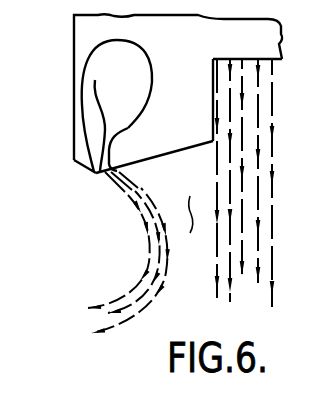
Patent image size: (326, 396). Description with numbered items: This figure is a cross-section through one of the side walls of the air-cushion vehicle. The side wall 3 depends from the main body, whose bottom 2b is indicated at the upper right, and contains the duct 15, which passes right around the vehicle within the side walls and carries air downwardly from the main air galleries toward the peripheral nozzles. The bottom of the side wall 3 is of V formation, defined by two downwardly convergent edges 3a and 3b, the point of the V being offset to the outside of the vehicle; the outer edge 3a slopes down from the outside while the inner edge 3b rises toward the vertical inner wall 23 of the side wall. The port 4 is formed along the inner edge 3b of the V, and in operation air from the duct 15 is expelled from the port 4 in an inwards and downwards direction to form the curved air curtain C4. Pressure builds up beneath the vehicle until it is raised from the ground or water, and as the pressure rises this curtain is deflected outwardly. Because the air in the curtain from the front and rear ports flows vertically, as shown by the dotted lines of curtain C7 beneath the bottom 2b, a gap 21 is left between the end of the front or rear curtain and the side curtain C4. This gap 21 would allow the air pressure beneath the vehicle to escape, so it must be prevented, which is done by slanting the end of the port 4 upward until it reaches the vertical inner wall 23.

The duct 15 is at (107, 62).
The bottom of the main body 2b is at (263, 58).
The side wall 3 is at (190, 102).
The vertical inner wall 23 is at (211, 121).
The inner edge 3b is at (160, 158).
The outer edge 3a is at (75, 161).
The port 4 is at (102, 173).
The gap 21 is at (192, 231).
The air curtain C4 is at (155, 270).
The air curtain C7 is at (241, 220).